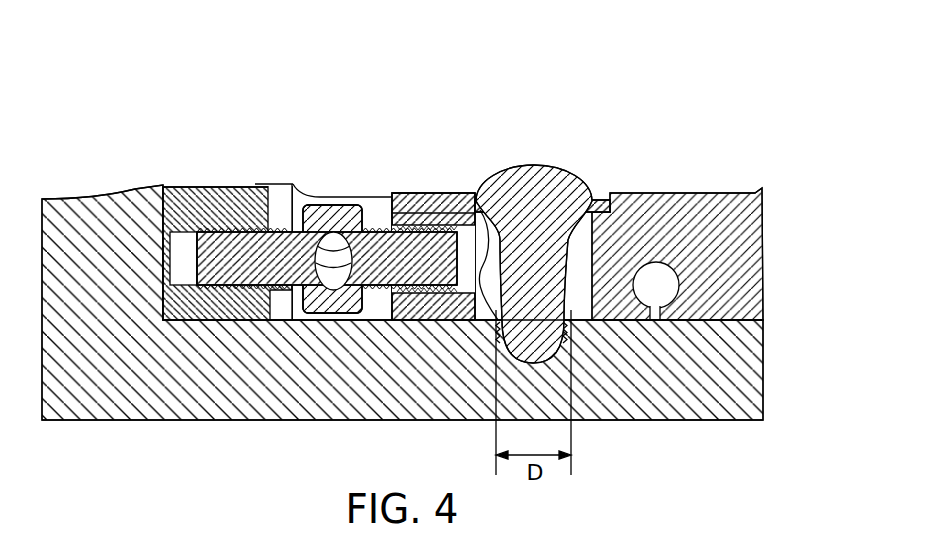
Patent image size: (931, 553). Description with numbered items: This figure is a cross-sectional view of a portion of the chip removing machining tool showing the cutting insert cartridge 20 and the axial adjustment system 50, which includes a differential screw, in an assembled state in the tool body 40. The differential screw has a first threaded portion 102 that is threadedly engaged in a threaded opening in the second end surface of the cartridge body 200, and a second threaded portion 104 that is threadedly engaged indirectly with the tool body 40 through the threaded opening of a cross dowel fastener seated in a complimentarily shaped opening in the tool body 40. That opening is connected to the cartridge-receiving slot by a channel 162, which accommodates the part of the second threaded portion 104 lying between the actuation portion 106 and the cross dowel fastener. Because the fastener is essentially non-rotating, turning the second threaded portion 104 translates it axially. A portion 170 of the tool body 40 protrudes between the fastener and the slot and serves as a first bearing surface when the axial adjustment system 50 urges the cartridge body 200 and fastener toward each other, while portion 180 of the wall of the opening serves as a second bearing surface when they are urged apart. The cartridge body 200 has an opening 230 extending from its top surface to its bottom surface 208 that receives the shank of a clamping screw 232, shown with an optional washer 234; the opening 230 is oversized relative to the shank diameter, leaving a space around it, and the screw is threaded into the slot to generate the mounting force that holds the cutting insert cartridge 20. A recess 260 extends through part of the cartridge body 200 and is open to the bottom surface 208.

The cutting insert cartridge 20 is at (584, 190).
The tool body 40 is at (83, 378).
The axial adjustment system 50 is at (389, 182).
The first threaded portion 102 is at (408, 253).
The second threaded portion 104 is at (231, 250).
The actuation portion 106 is at (343, 233).
The channel 162 is at (280, 212).
The portion of the tool body 170 is at (280, 303).
The portion of the wall of the opening 180 is at (163, 185).
The cartridge body 200 is at (705, 234).
The bottom surface 208 is at (442, 322).
The opening 230 is at (578, 288).
The clamping screw 232 is at (537, 193).
The washer 234 is at (607, 200).
The recess 260 is at (658, 285).